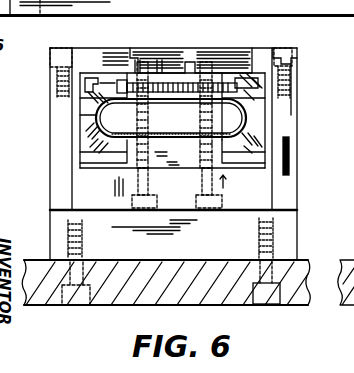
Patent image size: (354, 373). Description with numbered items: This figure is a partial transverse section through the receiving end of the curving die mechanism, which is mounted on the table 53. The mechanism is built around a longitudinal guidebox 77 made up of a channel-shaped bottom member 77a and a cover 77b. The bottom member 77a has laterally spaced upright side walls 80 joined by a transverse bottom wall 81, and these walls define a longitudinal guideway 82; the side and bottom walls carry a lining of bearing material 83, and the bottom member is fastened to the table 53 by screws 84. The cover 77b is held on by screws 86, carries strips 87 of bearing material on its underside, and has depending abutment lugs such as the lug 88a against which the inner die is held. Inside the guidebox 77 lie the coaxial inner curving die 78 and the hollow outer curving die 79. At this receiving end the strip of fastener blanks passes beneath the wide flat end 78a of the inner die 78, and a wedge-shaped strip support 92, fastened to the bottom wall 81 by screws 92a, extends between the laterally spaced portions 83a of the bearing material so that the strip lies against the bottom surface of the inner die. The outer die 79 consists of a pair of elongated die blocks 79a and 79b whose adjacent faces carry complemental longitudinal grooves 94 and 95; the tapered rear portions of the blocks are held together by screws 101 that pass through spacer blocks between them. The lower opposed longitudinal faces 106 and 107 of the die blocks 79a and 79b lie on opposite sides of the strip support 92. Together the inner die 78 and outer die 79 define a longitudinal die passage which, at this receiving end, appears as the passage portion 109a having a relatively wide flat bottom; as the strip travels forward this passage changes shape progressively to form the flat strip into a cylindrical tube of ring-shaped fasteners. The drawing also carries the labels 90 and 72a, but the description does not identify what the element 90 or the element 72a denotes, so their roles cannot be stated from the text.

The longitudinal groove 95 is at (80, 78).
The screws 86 is at (45, 75).
The outer curving die 79 is at (83, 98).
The die block 79b is at (83, 115).
The passage portion 109a is at (82, 130).
The bearing material 83 is at (82, 151).
The longitudinal guidebox 77 is at (44, 175).
The lower longitudinal face 106 is at (100, 163).
The bottom wall 81 is at (56, 204).
The screws 101 is at (106, 72).
The depending abutment lug 88a is at (186, 72).
The strips of bearing material 87 is at (240, 75).
The cover 77b is at (267, 48).
The die block 79a is at (255, 97).
The channel-shaped bottom member 77a is at (288, 108).
The inner curving die 78 is at (240, 117).
The longitudinal groove 94 is at (292, 127).
The upright side walls 80 is at (285, 156).
The longitudinal guideway 82 is at (288, 167).
The lower longitudinal face 107 is at (228, 140).
The screws 84 is at (275, 243).
The slot end 90 is at (105, 113).
The second vertical screw 72a is at (194, 112).
The wide flat end 78a is at (176, 154).
The laterally spaced portions of bearing material 83a is at (100, 166).
The strip support 92 is at (162, 163).
The screws 92a is at (228, 186).
The table 53 is at (155, 238).